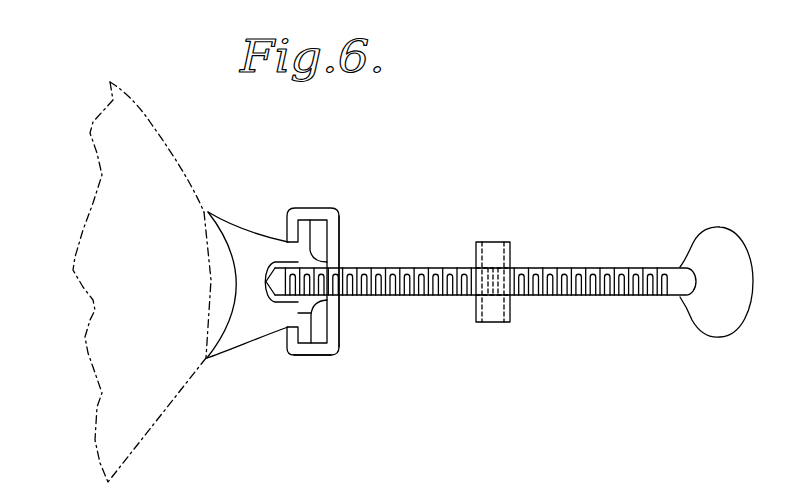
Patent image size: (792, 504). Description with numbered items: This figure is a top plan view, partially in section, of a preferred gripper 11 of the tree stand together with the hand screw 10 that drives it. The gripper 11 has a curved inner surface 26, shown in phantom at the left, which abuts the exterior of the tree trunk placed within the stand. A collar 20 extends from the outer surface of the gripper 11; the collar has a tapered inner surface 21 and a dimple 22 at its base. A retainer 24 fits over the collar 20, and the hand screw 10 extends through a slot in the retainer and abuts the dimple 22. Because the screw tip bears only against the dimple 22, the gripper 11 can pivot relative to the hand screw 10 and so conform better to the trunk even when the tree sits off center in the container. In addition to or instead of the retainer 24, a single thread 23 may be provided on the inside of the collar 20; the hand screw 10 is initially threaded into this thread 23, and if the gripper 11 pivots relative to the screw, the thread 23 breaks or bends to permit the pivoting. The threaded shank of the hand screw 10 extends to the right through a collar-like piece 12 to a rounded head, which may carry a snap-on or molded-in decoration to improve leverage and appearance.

The hand screw 10 is at (618, 268).
The gripper 11 is at (237, 216).
The collar 12 is at (510, 318).
The collar 20 is at (273, 240).
The tapered inner surface 21 is at (270, 265).
The dimple 22 is at (258, 302).
The thread 23 is at (322, 355).
The retainer 24 is at (339, 338).
The curved inner surface 26 is at (231, 313).